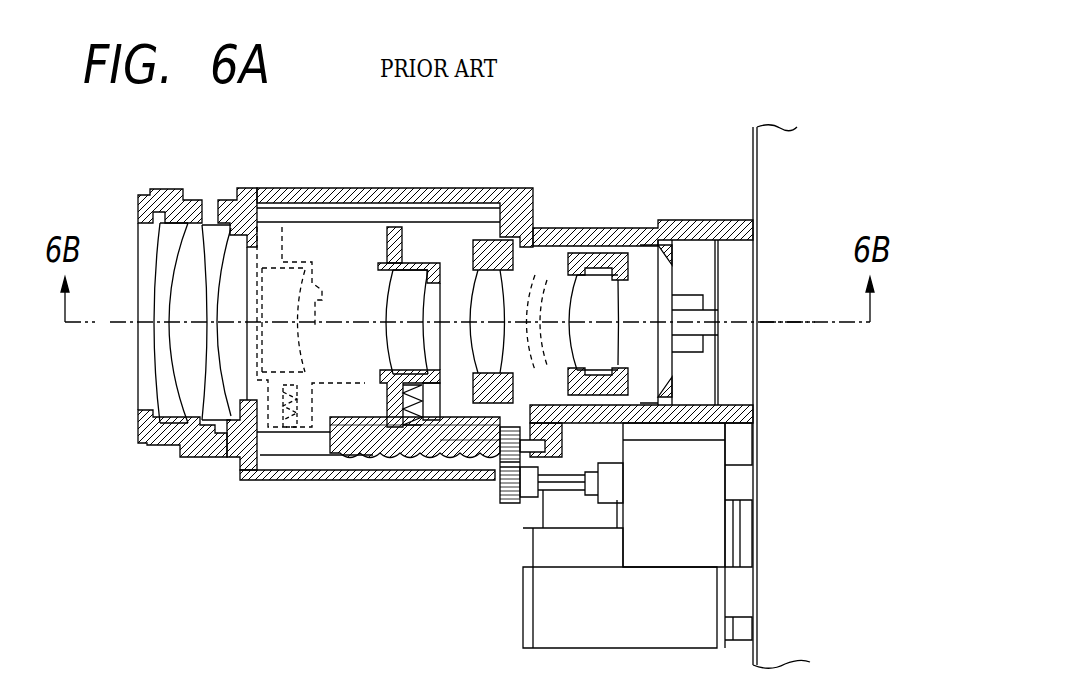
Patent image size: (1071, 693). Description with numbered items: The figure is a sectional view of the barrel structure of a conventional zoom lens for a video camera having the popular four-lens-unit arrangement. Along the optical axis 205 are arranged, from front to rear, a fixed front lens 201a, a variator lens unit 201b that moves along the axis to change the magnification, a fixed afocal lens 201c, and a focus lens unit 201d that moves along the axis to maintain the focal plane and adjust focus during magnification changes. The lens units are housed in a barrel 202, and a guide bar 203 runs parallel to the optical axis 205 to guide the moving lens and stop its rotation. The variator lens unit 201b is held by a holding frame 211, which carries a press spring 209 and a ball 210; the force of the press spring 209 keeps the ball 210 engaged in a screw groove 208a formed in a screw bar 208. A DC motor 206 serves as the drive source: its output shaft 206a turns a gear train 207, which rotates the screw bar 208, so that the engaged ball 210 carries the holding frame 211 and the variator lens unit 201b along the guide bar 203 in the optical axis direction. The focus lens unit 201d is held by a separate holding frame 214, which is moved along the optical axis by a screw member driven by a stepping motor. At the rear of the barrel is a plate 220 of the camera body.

The fixed front lens 201a is at (193, 257).
The variator lens unit 201b is at (438, 268).
The fixed afocal lens 201c is at (517, 297).
The focus lens unit 201d is at (615, 297).
The front barrel 202 is at (258, 190).
The guide bar 203 is at (482, 190).
The optical axis 205 is at (780, 323).
The DC motor 206 is at (543, 625).
The output shaft 206a is at (570, 490).
The gear train 207 is at (497, 493).
The screw bar 208 is at (237, 460).
The screw portion 208a is at (447, 440).
The press spring 209 is at (403, 375).
The ball 210 is at (403, 440).
The holding frame 211 is at (410, 245).
The holding frame 214 is at (590, 228).
The camera body plate 220 is at (752, 158).